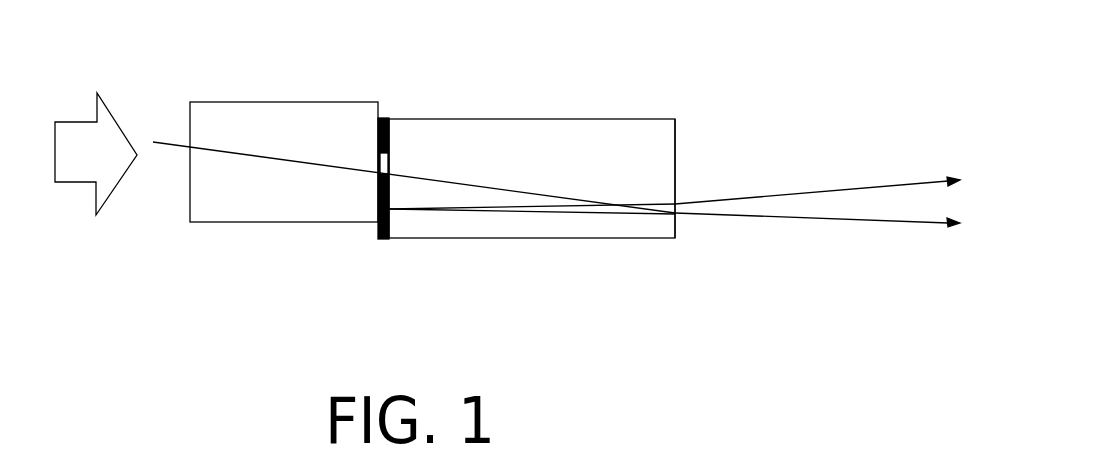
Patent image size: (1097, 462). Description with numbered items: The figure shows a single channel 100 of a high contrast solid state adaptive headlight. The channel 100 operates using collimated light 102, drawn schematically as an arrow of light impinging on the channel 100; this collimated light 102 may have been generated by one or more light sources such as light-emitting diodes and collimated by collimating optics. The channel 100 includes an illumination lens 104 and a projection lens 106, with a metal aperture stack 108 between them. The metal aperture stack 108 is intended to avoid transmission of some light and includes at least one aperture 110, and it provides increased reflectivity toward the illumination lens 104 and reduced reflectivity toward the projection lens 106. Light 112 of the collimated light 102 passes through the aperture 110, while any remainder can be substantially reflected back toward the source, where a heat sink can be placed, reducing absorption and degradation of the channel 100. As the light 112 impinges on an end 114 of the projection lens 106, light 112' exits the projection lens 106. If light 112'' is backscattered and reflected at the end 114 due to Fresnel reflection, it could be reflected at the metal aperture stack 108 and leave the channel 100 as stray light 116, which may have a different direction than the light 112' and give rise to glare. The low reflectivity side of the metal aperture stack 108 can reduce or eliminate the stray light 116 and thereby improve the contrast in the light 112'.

The channel 100 is at (720, 40).
The collimated light 102 is at (80, 121).
The illumination lens 104 is at (303, 102).
The projection lens 106 is at (600, 118).
The metal aperture stack 108 is at (381, 117).
The aperture 110 is at (390, 157).
The light 112 is at (414, 166).
The light 112' is at (817, 243).
The light 112'' is at (532, 245).
The end 114 is at (673, 134).
The stray light 116 is at (845, 189).